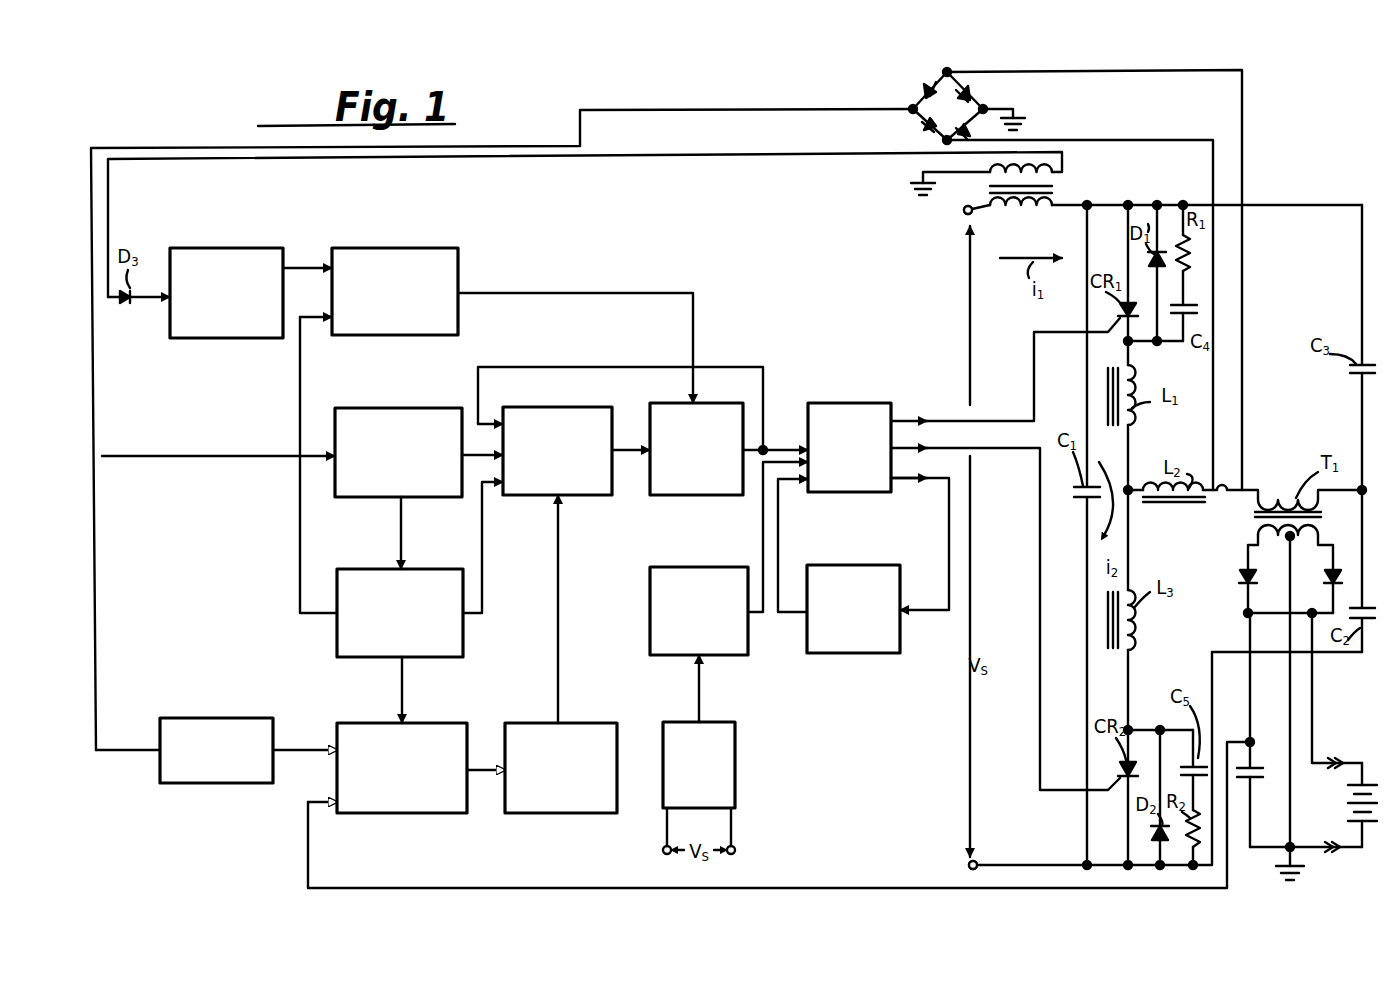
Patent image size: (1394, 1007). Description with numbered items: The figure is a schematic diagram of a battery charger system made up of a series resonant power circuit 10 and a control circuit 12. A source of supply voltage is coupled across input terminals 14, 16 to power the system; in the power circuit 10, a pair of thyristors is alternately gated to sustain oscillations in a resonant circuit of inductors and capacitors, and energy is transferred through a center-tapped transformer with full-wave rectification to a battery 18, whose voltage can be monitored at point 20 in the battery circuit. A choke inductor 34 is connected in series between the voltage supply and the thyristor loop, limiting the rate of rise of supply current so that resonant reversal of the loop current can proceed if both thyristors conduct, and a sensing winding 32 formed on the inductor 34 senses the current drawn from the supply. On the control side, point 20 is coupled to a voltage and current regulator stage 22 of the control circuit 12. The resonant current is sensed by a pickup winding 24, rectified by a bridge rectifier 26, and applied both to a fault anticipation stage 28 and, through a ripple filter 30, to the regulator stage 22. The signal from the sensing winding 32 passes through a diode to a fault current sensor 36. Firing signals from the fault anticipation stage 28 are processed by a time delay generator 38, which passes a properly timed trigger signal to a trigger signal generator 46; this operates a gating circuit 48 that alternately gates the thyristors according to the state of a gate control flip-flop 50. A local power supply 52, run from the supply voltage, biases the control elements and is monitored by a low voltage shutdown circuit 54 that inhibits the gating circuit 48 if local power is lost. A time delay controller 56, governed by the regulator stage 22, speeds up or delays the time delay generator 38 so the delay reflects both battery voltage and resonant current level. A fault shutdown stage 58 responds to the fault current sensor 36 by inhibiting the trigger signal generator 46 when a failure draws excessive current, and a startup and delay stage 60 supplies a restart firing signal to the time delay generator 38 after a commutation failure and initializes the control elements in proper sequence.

The series resonant power circuit 10 is at (958, 738).
The control circuit 12 is at (268, 808).
The input terminal 14 is at (962, 213).
The input terminal 16 is at (969, 863).
The battery 18 is at (1372, 782).
The point in the battery circuit 20 is at (1250, 742).
The voltage and current regulator stage 22 is at (447, 732).
The pickup winding 24 is at (1245, 488).
The bridge rectifier 26 is at (918, 96).
The fault anticipation stage 28 is at (367, 416).
The ripple filter 30 is at (250, 722).
The sensing winding 32 is at (1067, 175).
The inductor 34 is at (1031, 208).
The fault current sensor 36 is at (222, 256).
The time delay generator 38 is at (580, 415).
The trigger signal generator 46 is at (715, 412).
The gating circuit 48 is at (838, 410).
The gate control flip-flop 50 is at (826, 645).
The local power supply 52 is at (733, 733).
The low voltage shutdown circuit 54 is at (663, 578).
The time delay controller 56 is at (586, 732).
The fault shutdown stage 58 is at (433, 258).
The startup and delay stage 60 is at (357, 578).